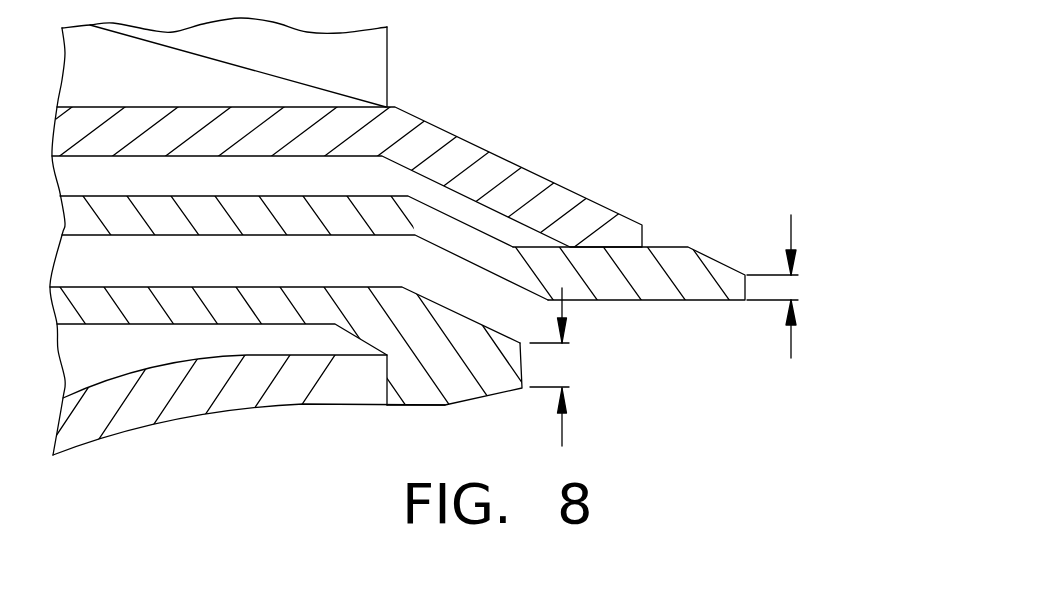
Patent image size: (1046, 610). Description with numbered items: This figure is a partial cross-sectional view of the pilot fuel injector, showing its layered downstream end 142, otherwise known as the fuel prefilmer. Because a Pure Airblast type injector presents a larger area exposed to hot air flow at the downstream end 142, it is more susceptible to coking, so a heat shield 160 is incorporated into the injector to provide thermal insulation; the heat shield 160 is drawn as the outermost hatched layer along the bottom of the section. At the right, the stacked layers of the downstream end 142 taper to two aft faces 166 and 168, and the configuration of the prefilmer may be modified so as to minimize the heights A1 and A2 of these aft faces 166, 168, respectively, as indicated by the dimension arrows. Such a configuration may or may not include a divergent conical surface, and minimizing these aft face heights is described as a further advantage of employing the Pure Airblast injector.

The downstream end 142 is at (523, 305).
The heat shield 160 is at (125, 443).
The aft face 166 is at (524, 365).
The aft face 168 is at (745, 288).
The height of aft face A1 is at (562, 432).
The height of aft face A2 is at (791, 342).